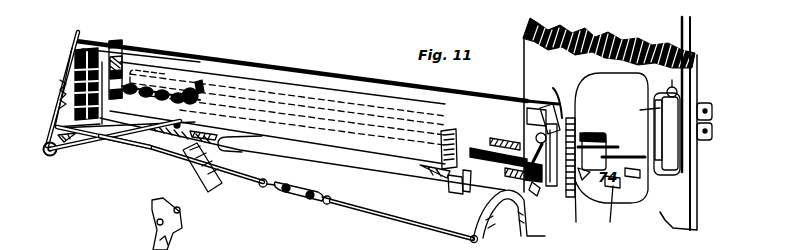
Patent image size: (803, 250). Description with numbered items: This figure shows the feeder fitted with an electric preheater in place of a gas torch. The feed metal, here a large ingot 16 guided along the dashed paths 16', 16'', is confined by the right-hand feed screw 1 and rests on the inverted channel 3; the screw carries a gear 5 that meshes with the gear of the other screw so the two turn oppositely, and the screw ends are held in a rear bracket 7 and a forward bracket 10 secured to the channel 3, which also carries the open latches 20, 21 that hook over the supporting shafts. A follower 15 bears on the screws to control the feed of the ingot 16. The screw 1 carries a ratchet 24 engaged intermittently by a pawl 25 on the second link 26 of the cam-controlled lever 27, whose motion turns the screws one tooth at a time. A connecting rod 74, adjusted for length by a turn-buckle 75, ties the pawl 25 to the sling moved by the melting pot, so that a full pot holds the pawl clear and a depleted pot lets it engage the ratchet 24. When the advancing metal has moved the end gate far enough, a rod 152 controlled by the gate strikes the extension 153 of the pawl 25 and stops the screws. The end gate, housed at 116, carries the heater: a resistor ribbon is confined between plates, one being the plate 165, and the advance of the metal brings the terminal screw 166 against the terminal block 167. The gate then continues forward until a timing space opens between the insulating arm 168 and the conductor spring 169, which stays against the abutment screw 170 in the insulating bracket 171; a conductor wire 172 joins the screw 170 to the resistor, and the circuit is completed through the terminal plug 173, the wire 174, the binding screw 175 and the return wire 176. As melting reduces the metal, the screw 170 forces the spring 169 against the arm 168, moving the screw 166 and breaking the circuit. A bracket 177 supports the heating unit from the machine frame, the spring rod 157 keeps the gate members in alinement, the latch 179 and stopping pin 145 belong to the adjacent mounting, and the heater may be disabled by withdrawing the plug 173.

The right-hand feed screw 1 is at (480, 148).
The inverted channel 3 is at (293, 153).
The gear 5 is at (124, 45).
The rear bracket 7 is at (128, 150).
The forward bracket 10 is at (480, 194).
The follower or chaser 15 is at (175, 86).
The large ingot 16 is at (449, 136).
The guide path 16' is at (287, 83).
The guide path 16'' is at (297, 97).
The rear open latch 20 is at (231, 150).
The open latch 21 is at (450, 193).
The ratchet 24 is at (100, 46).
The pawl 25 is at (60, 117).
The second link 26 is at (103, 146).
The cam-controlled lever 27 is at (187, 172).
The connecting rod 74 is at (370, 213).
The turn-buckle 75 is at (327, 197).
The housing 116 is at (516, 190).
The stopping pin 145 is at (593, 178).
The rod 152 is at (410, 88).
The pawl extension 153 is at (72, 38).
The spring rod 157 is at (533, 118).
The plate of the end gate 165 is at (545, 192).
The terminal screw 166 is at (640, 110).
The terminal block 167 is at (660, 102).
The insulating arm 168 is at (633, 174).
The conductor spring 169 is at (634, 152).
The abutment screw 170 is at (611, 133).
The insulating bracket 171 is at (595, 130).
The conductor wire 172 is at (577, 112).
The terminal plug 173 is at (587, 209).
The wire 174 is at (626, 212).
The binding screw 175 is at (676, 176).
The return wire 176 is at (697, 90).
The bracket 177 is at (675, 152).
The latch 179 is at (615, 186).